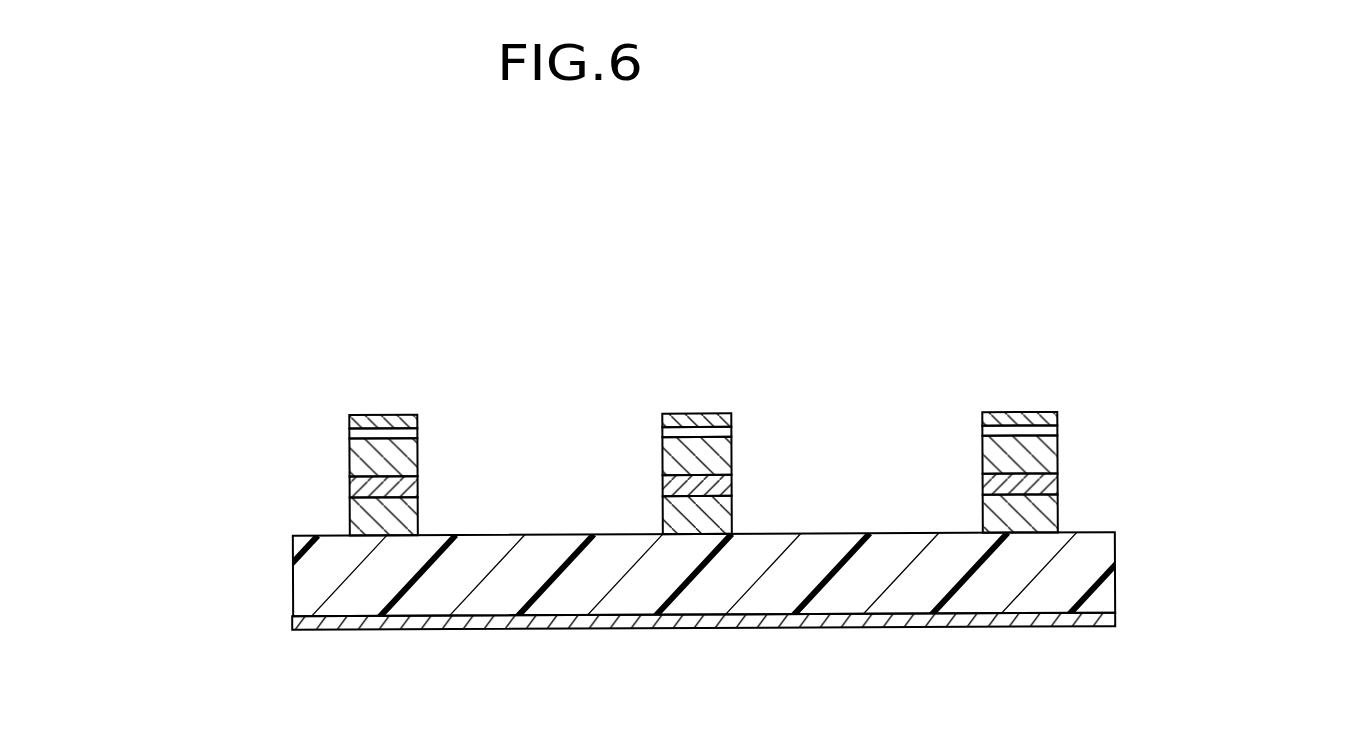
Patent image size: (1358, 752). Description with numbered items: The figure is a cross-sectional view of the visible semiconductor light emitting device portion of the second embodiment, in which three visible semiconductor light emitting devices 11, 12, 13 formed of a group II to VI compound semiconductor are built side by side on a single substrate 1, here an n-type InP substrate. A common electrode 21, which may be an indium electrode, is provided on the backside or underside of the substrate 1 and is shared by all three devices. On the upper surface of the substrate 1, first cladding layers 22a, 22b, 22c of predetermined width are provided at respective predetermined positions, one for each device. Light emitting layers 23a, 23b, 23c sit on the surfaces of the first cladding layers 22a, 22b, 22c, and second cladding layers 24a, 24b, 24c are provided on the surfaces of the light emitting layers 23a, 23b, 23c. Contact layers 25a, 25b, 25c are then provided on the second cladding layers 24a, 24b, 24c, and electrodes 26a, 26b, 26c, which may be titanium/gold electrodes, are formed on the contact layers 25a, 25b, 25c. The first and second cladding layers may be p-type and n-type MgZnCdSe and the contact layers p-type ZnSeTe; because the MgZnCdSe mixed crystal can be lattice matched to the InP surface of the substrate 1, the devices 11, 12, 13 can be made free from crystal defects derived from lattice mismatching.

The substrate 1 is at (337, 602).
The common electrode 21 is at (702, 620).
The visible semiconductor light emitting device 11 is at (328, 372).
The visible semiconductor light emitting device 12 is at (698, 367).
The visible semiconductor light emitting device 13 is at (1033, 369).
The first cladding layer 22a is at (234, 519).
The light emitting layer 23a is at (358, 485).
The second cladding layer 24a is at (358, 460).
The contact layer 25a is at (350, 432).
The electrode 26a is at (365, 420).
The first cladding layer 22b is at (586, 507).
The light emitting layer 23b is at (668, 484).
The second cladding layer 24b is at (668, 458).
The contact layer 25b is at (665, 432).
The electrode 26b is at (680, 420).
The first cladding layer 22c is at (905, 501).
The light emitting layer 23c is at (990, 485).
The second cladding layer 24c is at (990, 455).
The contact layer 25c is at (987, 432).
The electrode 26c is at (1003, 418).